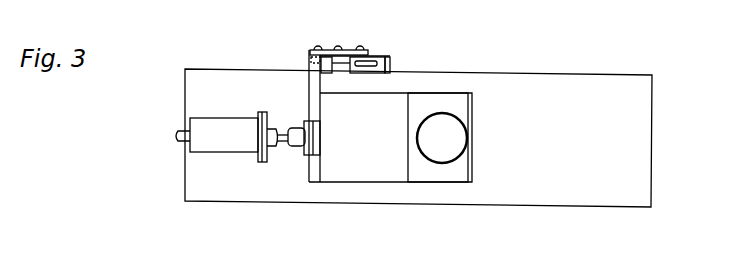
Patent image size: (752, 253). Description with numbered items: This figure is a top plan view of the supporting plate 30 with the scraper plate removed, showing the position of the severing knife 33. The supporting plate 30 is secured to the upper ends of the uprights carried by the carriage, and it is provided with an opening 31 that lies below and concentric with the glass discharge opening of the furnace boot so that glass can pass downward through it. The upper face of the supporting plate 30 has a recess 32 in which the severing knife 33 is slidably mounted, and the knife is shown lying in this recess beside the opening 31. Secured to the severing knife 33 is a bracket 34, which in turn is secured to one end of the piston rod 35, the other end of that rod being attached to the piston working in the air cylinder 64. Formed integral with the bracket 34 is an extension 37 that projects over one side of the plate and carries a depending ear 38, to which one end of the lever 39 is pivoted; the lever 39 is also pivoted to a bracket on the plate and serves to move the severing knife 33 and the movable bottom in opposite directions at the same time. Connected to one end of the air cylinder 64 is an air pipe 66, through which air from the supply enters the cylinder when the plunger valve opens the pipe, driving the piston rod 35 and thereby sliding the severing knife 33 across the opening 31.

The supporting plate 30 is at (640, 108).
The opening 31 is at (453, 139).
The recess 32 is at (450, 181).
The severing knife 33 is at (390, 137).
The bracket 34 is at (306, 156).
The piston rod 35 is at (283, 128).
The extension 37 is at (320, 107).
The depending ear 38 is at (310, 61).
The lever 39 is at (328, 43).
The air cylinder 64 is at (223, 127).
The air pipe 66 is at (176, 135).